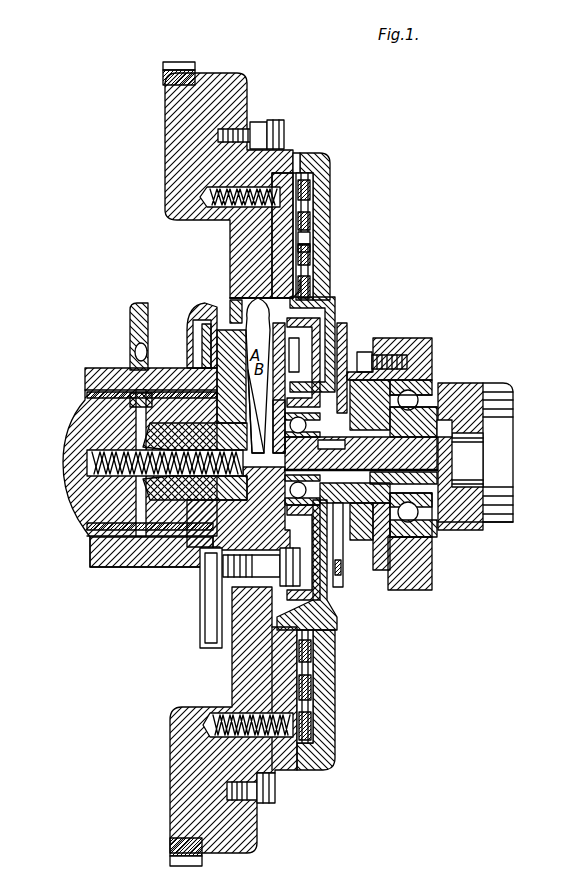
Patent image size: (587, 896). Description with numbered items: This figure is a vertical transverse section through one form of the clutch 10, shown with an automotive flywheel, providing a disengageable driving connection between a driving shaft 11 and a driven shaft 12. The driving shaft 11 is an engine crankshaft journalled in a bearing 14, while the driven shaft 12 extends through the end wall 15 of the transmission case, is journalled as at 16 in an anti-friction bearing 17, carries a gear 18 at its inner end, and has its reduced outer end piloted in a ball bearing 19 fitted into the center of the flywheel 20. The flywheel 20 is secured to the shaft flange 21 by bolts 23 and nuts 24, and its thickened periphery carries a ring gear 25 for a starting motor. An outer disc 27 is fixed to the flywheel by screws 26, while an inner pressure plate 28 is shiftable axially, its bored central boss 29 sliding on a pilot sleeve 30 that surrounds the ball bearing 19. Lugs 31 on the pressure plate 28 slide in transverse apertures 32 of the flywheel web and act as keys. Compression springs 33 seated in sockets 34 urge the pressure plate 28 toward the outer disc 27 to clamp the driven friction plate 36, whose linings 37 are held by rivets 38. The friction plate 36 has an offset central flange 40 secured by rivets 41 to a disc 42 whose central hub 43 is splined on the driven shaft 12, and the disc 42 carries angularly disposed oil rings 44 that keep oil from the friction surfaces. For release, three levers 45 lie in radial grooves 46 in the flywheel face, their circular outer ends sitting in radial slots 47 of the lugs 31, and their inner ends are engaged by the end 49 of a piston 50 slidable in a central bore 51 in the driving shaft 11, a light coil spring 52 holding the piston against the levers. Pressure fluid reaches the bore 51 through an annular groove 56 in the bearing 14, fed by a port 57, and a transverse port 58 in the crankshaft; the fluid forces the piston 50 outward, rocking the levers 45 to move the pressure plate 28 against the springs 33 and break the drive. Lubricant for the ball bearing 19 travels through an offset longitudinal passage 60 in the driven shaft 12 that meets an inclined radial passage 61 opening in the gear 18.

The clutch 10 is at (387, 203).
The driving shaft 11 is at (85, 425).
The driven shaft 12 is at (483, 475).
The bearing 14 is at (100, 563).
The end wall 15 is at (432, 345).
The journal 16 is at (440, 525).
The anti-friction bearing 17 is at (432, 540).
The gear 18 is at (513, 524).
The ball bearing 19 is at (283, 425).
The flywheel 20 is at (170, 134).
The shaft flange 21 is at (208, 568).
The bolts 23 is at (217, 588).
The nuts 24 is at (327, 614).
The ring gear 25 is at (165, 76).
The screws 26 is at (268, 125).
The outer disc 27 is at (318, 195).
The pressure plate 28 is at (280, 238).
The central boss 29 is at (297, 390).
The pilot sleeve 30 is at (310, 408).
The lugs 31 is at (232, 298).
The transverse apertures 32 is at (238, 298).
The compression springs 33 is at (215, 197).
The sockets 34 is at (240, 190).
The friction plate 36 is at (312, 236).
The linings 37 is at (312, 250).
The rivets 38 is at (312, 200).
The central flange 40 is at (335, 300).
The rivets 41 is at (342, 335).
The disc 42 is at (358, 355).
The central hub 43 is at (338, 447).
The oil rings 44 is at (343, 588).
The levers 45 is at (258, 375).
The grooves 46 is at (190, 375).
The radial slots 47 is at (245, 290).
The end of piston 49 is at (282, 486).
The piston 50 is at (187, 503).
The central bore 51 is at (158, 478).
The coil spring 52 is at (233, 477).
The annular groove 56 is at (110, 532).
The port 57 is at (135, 352).
The transverse port 58 is at (138, 397).
The longitudinal passage 60 is at (361, 460).
The inclined radial passage 61 is at (440, 428).